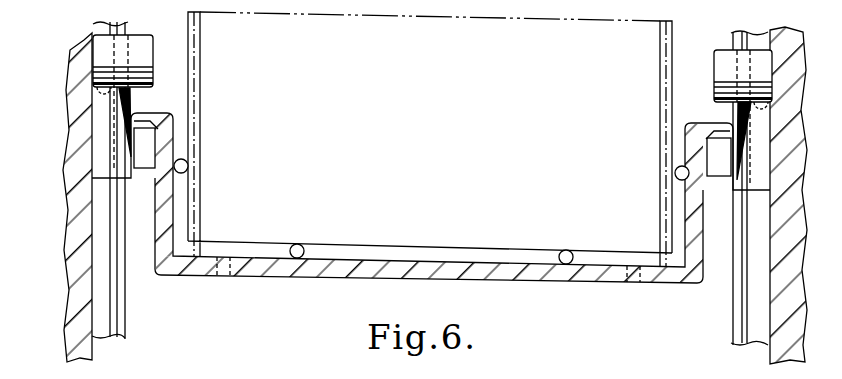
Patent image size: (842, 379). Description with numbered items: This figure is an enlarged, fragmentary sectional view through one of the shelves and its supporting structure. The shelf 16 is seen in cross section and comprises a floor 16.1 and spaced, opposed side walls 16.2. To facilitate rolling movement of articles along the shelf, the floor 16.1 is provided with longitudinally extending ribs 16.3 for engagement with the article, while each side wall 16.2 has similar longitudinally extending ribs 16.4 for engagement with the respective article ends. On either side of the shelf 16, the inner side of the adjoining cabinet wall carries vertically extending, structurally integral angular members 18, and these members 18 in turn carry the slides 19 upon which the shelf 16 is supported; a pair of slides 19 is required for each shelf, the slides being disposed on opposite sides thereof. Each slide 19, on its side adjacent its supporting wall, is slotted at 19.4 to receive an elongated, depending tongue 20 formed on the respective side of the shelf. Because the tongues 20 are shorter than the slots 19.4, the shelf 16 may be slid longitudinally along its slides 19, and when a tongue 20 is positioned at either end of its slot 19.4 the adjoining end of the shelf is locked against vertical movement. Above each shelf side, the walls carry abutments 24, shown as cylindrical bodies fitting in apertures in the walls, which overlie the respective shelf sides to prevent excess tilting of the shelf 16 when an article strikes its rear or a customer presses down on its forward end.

The shelf 16 is at (314, 277).
The floor 16.1 is at (408, 265).
The side wall 16.2 is at (163, 217).
The rib 16.3 is at (295, 245).
The rib 16.4 is at (190, 164).
The member 18 is at (125, 331).
The slide 19 is at (140, 181).
The slot 19.4 is at (133, 116).
The tongue 20 is at (131, 150).
The abutment 24 is at (140, 60).